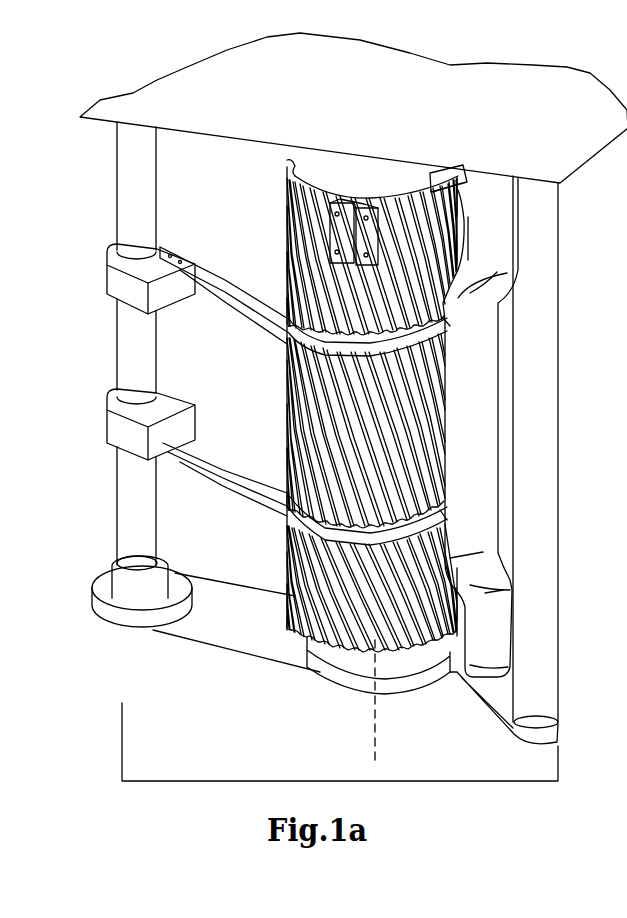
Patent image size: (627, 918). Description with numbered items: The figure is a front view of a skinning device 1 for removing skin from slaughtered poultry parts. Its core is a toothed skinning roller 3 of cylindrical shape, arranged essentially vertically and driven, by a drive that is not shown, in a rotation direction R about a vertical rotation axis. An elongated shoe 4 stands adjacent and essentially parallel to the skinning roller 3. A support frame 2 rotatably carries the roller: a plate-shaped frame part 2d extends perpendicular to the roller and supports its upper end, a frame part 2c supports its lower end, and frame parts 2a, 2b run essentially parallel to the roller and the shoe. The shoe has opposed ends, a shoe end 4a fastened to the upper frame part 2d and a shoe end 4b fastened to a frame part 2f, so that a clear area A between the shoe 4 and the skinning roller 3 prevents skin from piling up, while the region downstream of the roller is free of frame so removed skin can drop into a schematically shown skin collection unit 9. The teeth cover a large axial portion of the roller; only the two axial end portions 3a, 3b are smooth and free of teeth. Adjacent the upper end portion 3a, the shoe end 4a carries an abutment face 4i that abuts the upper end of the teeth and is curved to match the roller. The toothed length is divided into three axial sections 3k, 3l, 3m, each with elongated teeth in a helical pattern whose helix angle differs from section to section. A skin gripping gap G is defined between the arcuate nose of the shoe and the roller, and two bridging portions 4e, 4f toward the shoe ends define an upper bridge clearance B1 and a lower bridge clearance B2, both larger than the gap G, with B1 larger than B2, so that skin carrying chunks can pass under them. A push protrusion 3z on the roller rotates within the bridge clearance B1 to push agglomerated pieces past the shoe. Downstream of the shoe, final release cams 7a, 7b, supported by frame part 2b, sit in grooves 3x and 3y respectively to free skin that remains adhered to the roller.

The skinning device 1 is at (454, 132).
The support frame 2 is at (619, 405).
The frame part 2a is at (540, 454).
The frame part 2b is at (128, 192).
The frame part 2c is at (219, 632).
The plate-shaped frame part 2d is at (353, 108).
The frame part 2f is at (500, 700).
The toothed skinning roller 3 is at (273, 226).
The axial end portion 3a is at (354, 180).
The axial end portion 3b is at (318, 676).
The axial section 3k is at (322, 277).
The axial section 3l is at (310, 400).
The axial section 3m is at (311, 564).
The groove 3x is at (443, 515).
The groove 3y is at (447, 320).
The push protrusion 3z is at (338, 230).
The elongated shoe 4 is at (491, 409).
The shoe end 4a is at (464, 186).
The shoe end 4b is at (489, 655).
The bridging portion 4e is at (505, 235).
The bridging portion 4f is at (497, 620).
The abutment face 4i is at (447, 183).
The final release cam 7a is at (210, 470).
The final release cam 7b is at (228, 292).
The skin collection unit 9 is at (122, 745).
The clear area A is at (441, 691).
The upper bridge clearance B1 is at (467, 225).
The lower bridge clearance B2 is at (463, 608).
The skin gripping gap G is at (422, 455).
The rotation direction R is at (418, 137).